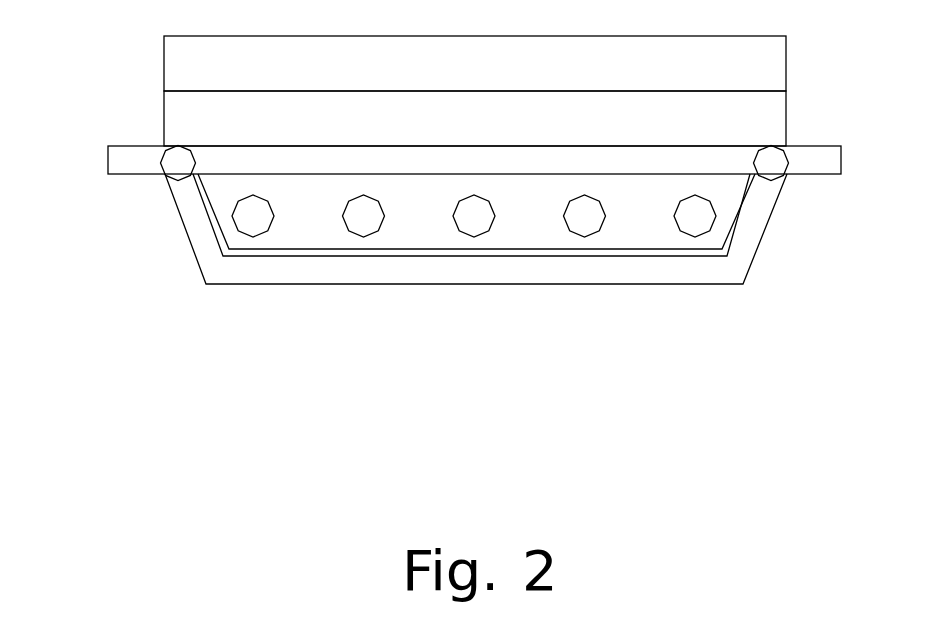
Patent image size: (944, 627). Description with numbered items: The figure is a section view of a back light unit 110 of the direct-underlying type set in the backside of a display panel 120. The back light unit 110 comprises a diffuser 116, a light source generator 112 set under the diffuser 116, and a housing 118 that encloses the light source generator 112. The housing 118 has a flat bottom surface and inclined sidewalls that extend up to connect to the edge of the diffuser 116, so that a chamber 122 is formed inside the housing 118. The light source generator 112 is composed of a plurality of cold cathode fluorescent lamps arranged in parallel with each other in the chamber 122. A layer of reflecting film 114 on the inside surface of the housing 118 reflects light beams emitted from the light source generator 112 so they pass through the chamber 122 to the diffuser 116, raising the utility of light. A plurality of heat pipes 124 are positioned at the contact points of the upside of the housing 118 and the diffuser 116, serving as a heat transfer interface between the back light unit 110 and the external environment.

The back light unit 110 is at (88, 89).
The light source generator 112 is at (702, 220).
The reflecting film 114 is at (682, 253).
The diffuser 116 is at (765, 117).
The housing 118 is at (593, 273).
The display panel 120 is at (765, 60).
The chamber 122 is at (511, 235).
The heat pipe 124 is at (773, 163).